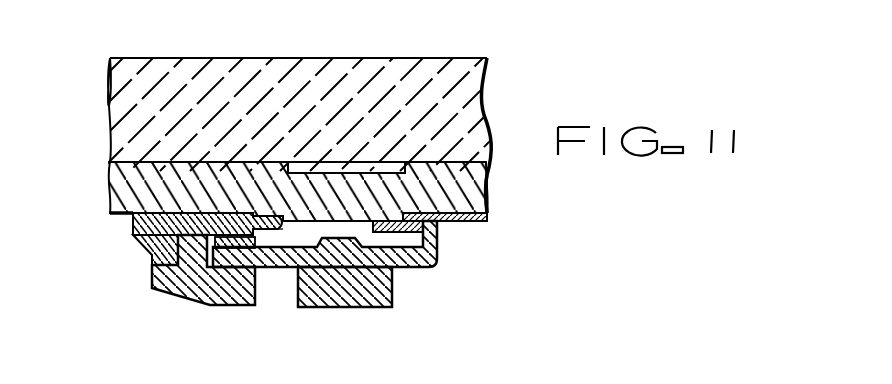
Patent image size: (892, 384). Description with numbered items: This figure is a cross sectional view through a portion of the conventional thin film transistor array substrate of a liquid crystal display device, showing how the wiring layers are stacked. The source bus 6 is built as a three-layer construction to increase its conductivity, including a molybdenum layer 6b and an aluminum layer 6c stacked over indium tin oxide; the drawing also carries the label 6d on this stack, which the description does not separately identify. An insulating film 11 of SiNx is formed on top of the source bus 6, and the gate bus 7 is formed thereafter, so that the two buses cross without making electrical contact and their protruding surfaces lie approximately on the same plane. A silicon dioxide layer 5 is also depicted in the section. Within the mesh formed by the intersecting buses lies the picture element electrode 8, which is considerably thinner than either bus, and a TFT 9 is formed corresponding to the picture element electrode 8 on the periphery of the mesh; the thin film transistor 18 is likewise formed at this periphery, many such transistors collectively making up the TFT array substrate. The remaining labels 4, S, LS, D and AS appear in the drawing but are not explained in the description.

The upper body 4 is at (118, 87).
The SiO2 layer 5 is at (162, 168).
The source bus 6 is at (177, 293).
The molybdenum (Mo) layer 6b is at (190, 272).
The aluminum (Al) layer 6c is at (153, 263).
The retainer ring flange 6d is at (187, 213).
The gate bus 7 is at (393, 280).
The picture element electrode 8 is at (467, 221).
The TFT 9 is at (440, 252).
The insulating film (SiNx) 11 is at (133, 222).
The thin film transistor 18 is at (522, 87).
The sensing surface S is at (257, 213).
The lower surface recess LS is at (333, 170).
The diaphragm D is at (403, 222).
The air space AS is at (360, 233).